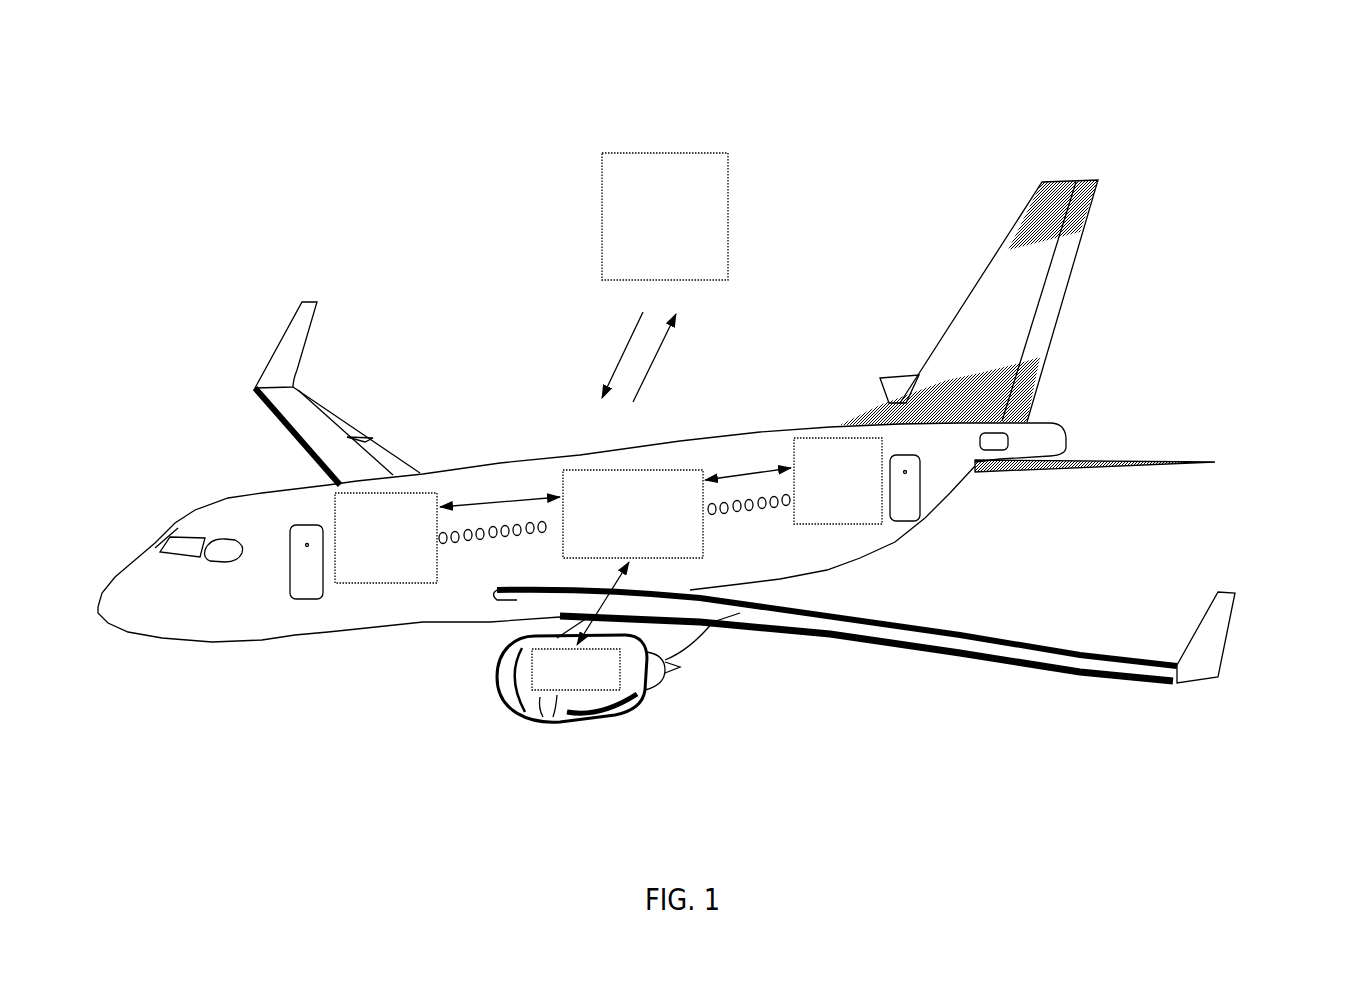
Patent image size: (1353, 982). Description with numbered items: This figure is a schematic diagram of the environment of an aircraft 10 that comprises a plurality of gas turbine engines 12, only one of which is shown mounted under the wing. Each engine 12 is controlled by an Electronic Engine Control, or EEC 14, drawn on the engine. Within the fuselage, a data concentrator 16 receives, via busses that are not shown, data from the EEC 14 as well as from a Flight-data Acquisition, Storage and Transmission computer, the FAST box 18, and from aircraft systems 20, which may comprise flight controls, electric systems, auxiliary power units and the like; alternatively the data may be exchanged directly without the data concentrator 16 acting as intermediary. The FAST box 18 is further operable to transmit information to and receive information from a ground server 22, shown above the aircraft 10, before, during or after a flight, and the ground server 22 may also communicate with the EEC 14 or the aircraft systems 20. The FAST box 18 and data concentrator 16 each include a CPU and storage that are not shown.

The aircraft 10 is at (1210, 150).
The gas turbine engine 12 is at (620, 698).
The Electronic Engine Control (EEC) 14 is at (548, 662).
The data concentrator 16 is at (590, 483).
The FAST box 18 is at (849, 511).
The aircraft systems 20 is at (358, 578).
The ground server 22 is at (690, 150).